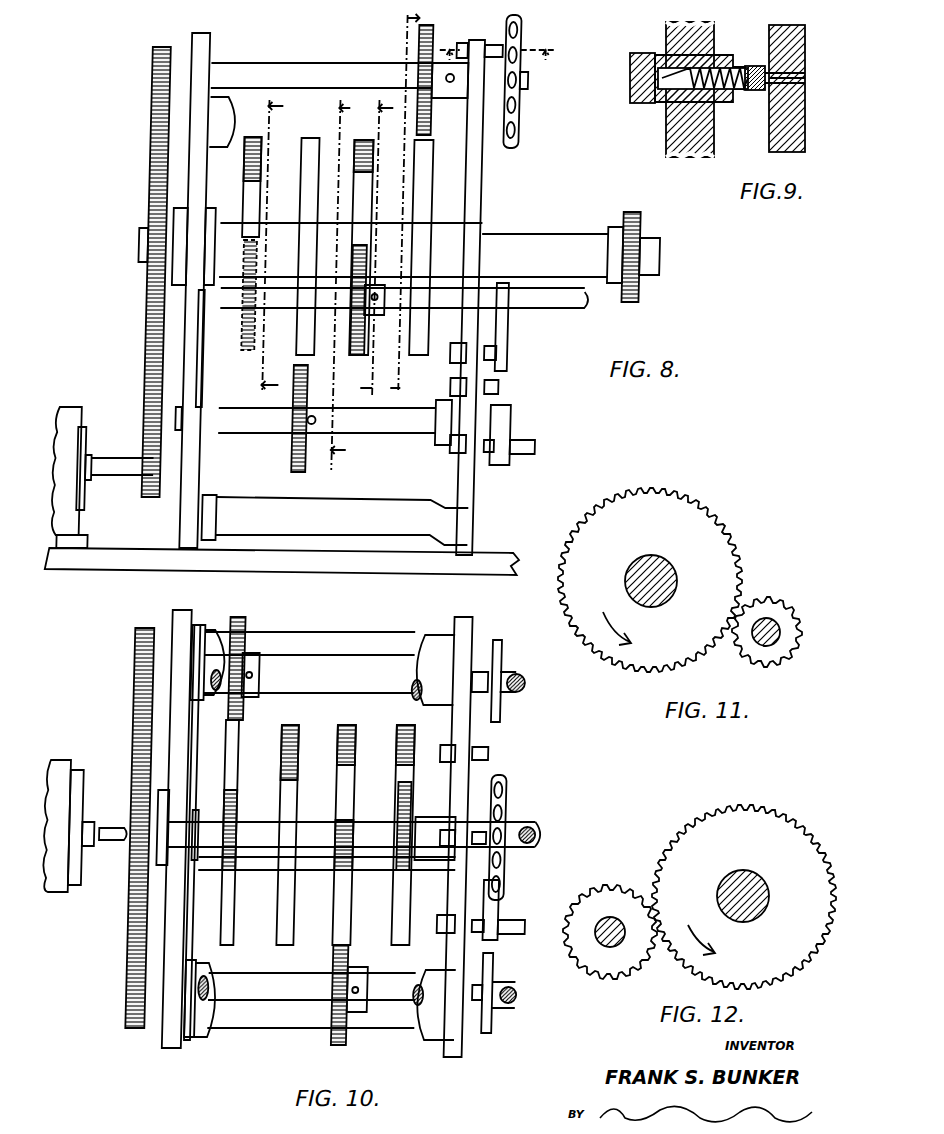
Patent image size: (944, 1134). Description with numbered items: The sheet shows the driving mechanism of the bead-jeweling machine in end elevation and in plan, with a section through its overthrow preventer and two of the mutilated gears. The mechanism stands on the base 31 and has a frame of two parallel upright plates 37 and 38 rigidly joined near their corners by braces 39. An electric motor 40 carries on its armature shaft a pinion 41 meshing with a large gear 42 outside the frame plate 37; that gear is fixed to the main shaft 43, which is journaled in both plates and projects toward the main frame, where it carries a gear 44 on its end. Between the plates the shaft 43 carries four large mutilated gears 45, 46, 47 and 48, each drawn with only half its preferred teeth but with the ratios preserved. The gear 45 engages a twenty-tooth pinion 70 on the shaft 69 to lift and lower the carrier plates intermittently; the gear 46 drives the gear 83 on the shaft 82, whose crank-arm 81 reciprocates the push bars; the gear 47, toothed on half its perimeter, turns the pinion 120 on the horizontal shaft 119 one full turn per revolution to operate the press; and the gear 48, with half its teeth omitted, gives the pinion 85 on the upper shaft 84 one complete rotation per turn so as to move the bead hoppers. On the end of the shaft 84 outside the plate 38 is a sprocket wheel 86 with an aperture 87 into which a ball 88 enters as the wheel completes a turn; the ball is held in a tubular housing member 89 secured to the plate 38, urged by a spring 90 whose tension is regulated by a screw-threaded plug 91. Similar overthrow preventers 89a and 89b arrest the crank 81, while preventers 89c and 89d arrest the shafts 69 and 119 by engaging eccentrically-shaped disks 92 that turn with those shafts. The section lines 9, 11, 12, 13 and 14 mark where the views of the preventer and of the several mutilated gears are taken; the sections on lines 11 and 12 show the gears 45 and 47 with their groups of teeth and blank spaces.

In FIG. 8, the base 31 is at (127, 555).
In FIG. 8, the frame plate 37 is at (197, 55).
In FIG. 10, the frame plate 37 is at (171, 618).
In FIG. 8, the frame plate 38 is at (488, 178).
In FIG. 9, the frame plate 38 is at (666, 134).
In FIG. 10, the frame plate 38 is at (468, 1050).
In FIG. 8, the braces 39 is at (231, 108).
In FIG. 10, the braces 39 is at (214, 655).
In FIG. 8, the electric motor 40 is at (86, 415).
In FIG. 10, the electric motor 40 is at (61, 775).
In FIG. 8, the pinion 41 is at (155, 490).
In FIG. 8, the large gear 42 is at (154, 335).
In FIG. 10, the large gear 42 is at (132, 920).
In FIG. 8, the shaft 43 is at (145, 241).
In FIG. 10, the shaft 43 is at (539, 828).
In FIG. 11, the shaft 43 is at (640, 578).
In FIG. 12, the shaft 43 is at (761, 893).
In FIG. 8, the gear 44 is at (647, 226).
In FIG. 8, the mutilated gear 45 is at (248, 184).
In FIG. 10, the mutilated gear 45 is at (226, 912).
In FIG. 11, the mutilated gear 45 is at (708, 531).
In FIG. 8, the mutilated gear 46 is at (305, 166).
In FIG. 10, the mutilated gear 46 is at (284, 903).
In FIG. 8, the mutilated gear 47 is at (358, 186).
In FIG. 10, the mutilated gear 47 is at (340, 900).
In FIG. 12, the mutilated gear 47 is at (685, 850).
In FIG. 8, the mutilated gear 48 is at (423, 189).
In FIG. 10, the mutilated gear 48 is at (397, 903).
In FIG. 8, the shaft 69 is at (244, 308).
In FIG. 10, the shaft 69 is at (370, 666).
In FIG. 11, the shaft 69 is at (771, 643).
In FIG. 10, the pinion 70 is at (241, 624).
In FIG. 11, the pinion 70 is at (787, 620).
In FIG. 8, the crank-arm 81 is at (516, 415).
In FIG. 10, the crank-arm 81 is at (501, 912).
In FIG. 8, the shaft 82 is at (384, 427).
In FIG. 8, the gear 83 is at (303, 447).
In FIG. 8, the shaft 84 is at (304, 70).
In FIG. 10, the shaft 84 is at (274, 870).
In FIG. 8, the pinion 85 is at (420, 40).
In FIG. 10, the pinion 85 is at (398, 800).
In FIG. 8, the sprocket wheel 86 is at (522, 126).
In FIG. 9, the sprocket wheel 86 is at (805, 126).
In FIG. 10, the sprocket wheel 86 is at (507, 781).
In FIG. 9, the aperture 87 is at (805, 78).
In FIG. 9, the ball 88 is at (758, 92).
In FIG. 8, the tubular housing member 89 is at (491, 45).
In FIG. 9, the tubular housing member 89 is at (660, 62).
In FIG. 10, the tubular housing member 89 is at (467, 846).
In FIG. 8, the overthrow preventer 89a is at (501, 448).
In FIG. 10, the overthrow preventer 89a is at (471, 928).
In FIG. 8, the overthrow preventer 89b is at (508, 386).
In FIG. 10, the overthrow preventer 89b is at (489, 753).
In FIG. 10, the overthrow preventer 89c is at (485, 684).
In FIG. 8, the overthrow preventer 89d is at (505, 352).
In FIG. 10, the overthrow preventer 89d is at (486, 996).
In FIG. 9, the spring 90 is at (738, 66).
In FIG. 9, the plug 91 is at (630, 76).
In FIG. 10, the eccentrically-shaped disk 92 is at (498, 653).
In FIG. 8, the shaft 119 is at (588, 305).
In FIG. 10, the shaft 119 is at (521, 990).
In FIG. 8, the pinion 120 is at (377, 265).
In FIG. 10, the pinion 120 is at (352, 1040).
In FIG. 12, the pinion 120 is at (613, 900).
In FIG. 8, the section line 9— 9 is at (498, 43).
In FIG. 8, the section line 11— 11 is at (282, 246).
In FIG. 8, the section line 12— 12 is at (382, 249).
In FIG. 8, the section line 13— 13 is at (353, 286).
In FIG. 8, the section line 14— 14 is at (398, 206).